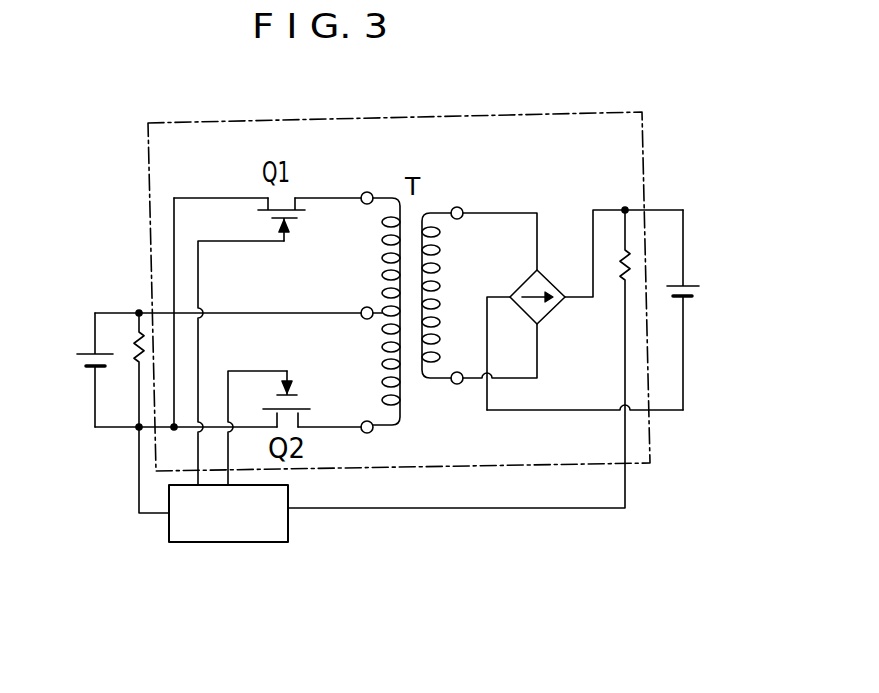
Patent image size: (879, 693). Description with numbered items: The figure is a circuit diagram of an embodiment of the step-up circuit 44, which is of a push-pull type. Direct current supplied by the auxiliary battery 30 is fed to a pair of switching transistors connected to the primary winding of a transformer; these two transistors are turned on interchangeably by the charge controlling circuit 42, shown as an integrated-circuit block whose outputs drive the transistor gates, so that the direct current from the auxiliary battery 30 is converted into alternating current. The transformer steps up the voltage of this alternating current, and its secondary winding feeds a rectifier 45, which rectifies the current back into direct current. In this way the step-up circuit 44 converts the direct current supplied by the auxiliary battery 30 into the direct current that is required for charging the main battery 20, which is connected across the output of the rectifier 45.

The main battery 20 is at (692, 284).
The auxiliary battery 30 is at (82, 352).
The charge controlling circuit 42 is at (224, 544).
The step-up circuit 44 is at (478, 112).
The rectifier 45 is at (553, 280).